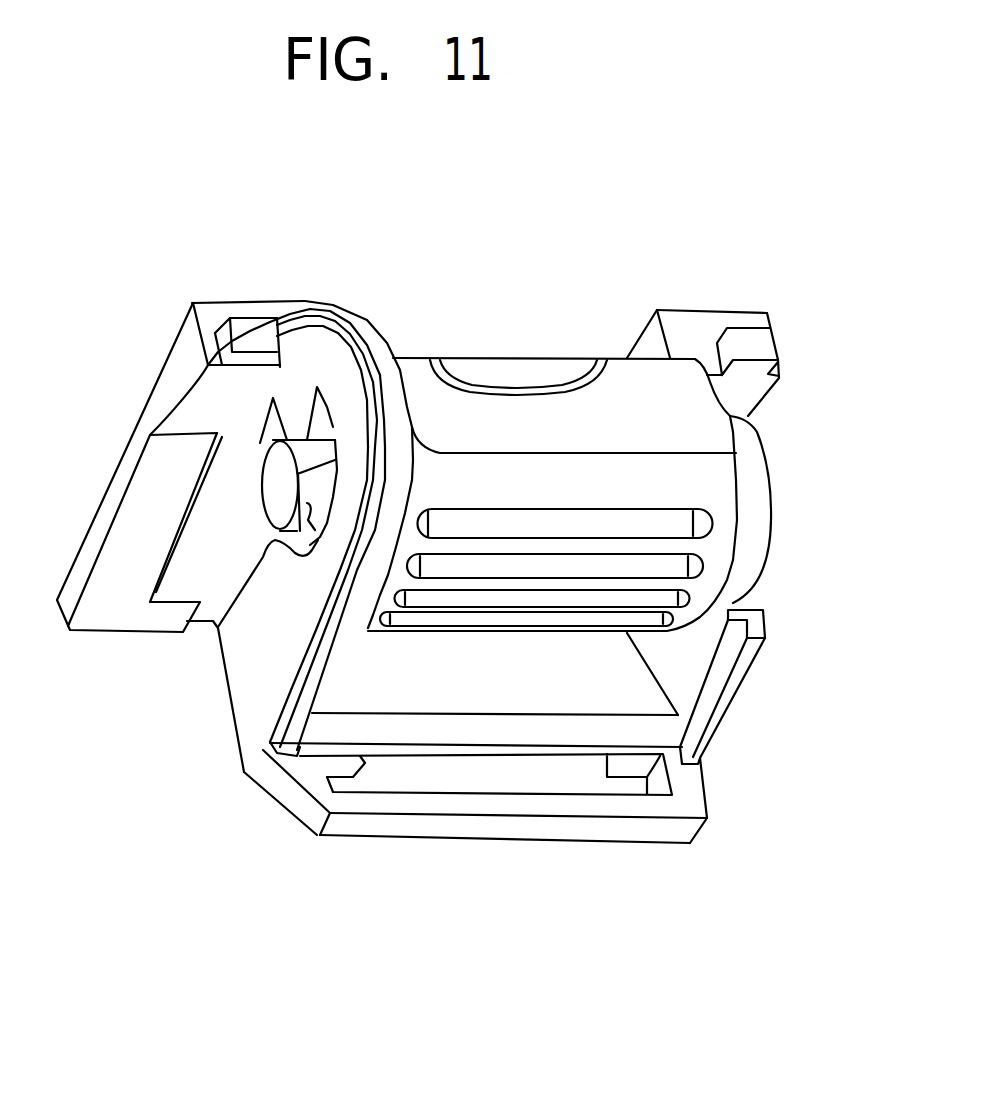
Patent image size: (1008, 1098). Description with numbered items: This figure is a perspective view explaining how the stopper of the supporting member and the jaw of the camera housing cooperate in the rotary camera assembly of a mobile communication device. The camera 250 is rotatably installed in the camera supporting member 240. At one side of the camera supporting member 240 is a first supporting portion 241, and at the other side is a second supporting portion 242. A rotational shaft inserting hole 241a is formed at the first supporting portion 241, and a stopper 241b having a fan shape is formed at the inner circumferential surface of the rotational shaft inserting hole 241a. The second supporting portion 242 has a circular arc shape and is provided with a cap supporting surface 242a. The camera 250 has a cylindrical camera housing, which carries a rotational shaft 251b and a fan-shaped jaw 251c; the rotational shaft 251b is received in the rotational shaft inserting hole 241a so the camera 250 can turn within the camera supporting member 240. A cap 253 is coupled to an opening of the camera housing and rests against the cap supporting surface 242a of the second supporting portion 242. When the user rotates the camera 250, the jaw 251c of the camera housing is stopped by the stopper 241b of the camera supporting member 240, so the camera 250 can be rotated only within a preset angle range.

The camera supporting member 240 is at (268, 811).
The first supporting portion 241 is at (276, 613).
The rotational shaft inserting hole 241a is at (220, 624).
The stopper 241b is at (300, 440).
The second supporting portion 242 is at (723, 707).
The cap supporting surface 242a is at (733, 610).
The camera 250 is at (628, 385).
The rotational shaft 251b is at (312, 457).
The jaw 251c is at (307, 478).
The cap 253 is at (758, 494).